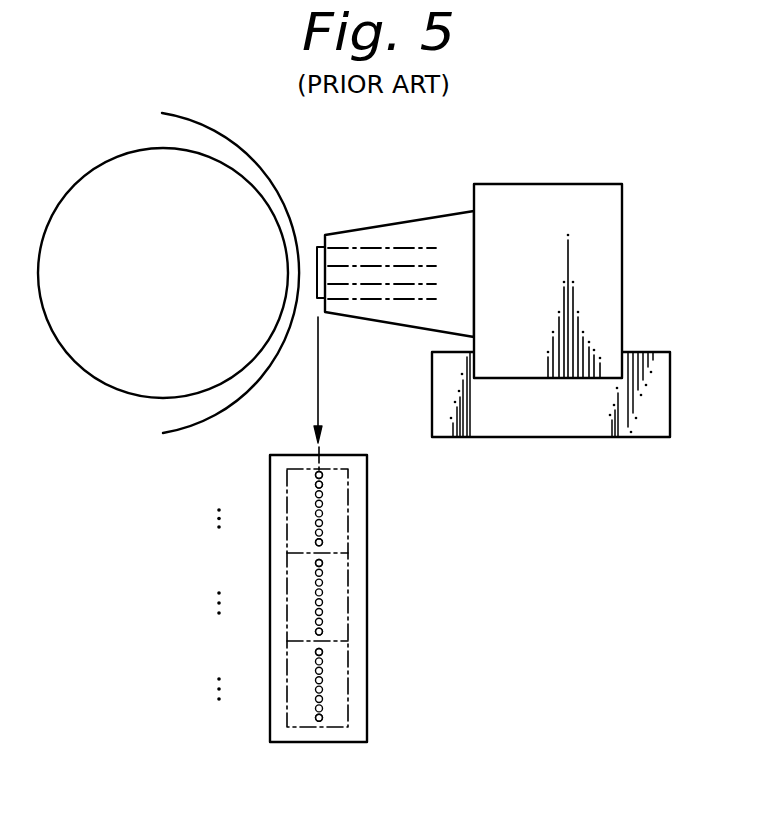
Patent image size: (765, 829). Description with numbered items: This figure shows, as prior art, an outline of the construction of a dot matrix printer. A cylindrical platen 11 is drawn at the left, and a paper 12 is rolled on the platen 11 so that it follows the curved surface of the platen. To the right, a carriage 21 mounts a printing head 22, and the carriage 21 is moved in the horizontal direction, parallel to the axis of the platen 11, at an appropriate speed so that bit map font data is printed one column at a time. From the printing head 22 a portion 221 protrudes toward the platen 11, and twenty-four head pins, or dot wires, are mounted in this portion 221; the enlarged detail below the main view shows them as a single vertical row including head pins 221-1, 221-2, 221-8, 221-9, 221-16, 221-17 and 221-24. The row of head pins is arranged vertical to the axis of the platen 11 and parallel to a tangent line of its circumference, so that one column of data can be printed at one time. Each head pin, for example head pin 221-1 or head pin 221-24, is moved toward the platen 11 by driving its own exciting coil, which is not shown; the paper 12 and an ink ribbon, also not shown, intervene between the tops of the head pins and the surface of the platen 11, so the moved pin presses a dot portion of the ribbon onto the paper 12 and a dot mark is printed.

The platen 11 is at (108, 162).
The paper 12 is at (173, 114).
The carriage 21 is at (656, 352).
The printing head 22 is at (548, 184).
The portion 221 is at (395, 220).
The head pin 221-1 is at (315, 475).
The head pin 221-2 is at (315, 485).
The head pin 221-8 is at (315, 542).
The head pin 221-9 is at (315, 563).
The head pin 221-16 is at (315, 632).
The head pin 221-17 is at (315, 652).
The head pin 221-24 is at (315, 718).